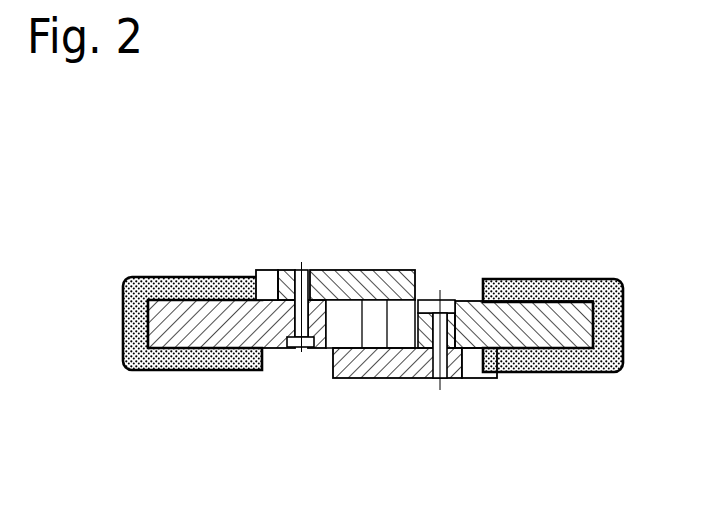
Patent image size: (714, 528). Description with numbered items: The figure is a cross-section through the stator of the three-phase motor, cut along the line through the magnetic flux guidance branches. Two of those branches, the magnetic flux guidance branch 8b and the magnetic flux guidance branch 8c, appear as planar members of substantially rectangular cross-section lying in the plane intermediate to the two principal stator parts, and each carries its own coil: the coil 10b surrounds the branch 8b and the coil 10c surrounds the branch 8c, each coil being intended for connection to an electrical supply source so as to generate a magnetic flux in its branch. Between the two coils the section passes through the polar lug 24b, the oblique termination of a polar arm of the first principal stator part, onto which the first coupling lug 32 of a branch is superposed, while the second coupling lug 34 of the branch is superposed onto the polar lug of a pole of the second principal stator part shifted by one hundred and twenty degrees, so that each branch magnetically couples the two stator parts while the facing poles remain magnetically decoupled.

The coil 10b is at (152, 277).
The coil 10c is at (607, 280).
The magnetic flux guidance branch 8b is at (180, 325).
The magnetic flux guidance branch 8c is at (551, 325).
The polar lug 24b is at (362, 271).
The first coupling lug 32 is at (315, 362).
The second coupling lug 34 is at (427, 283).